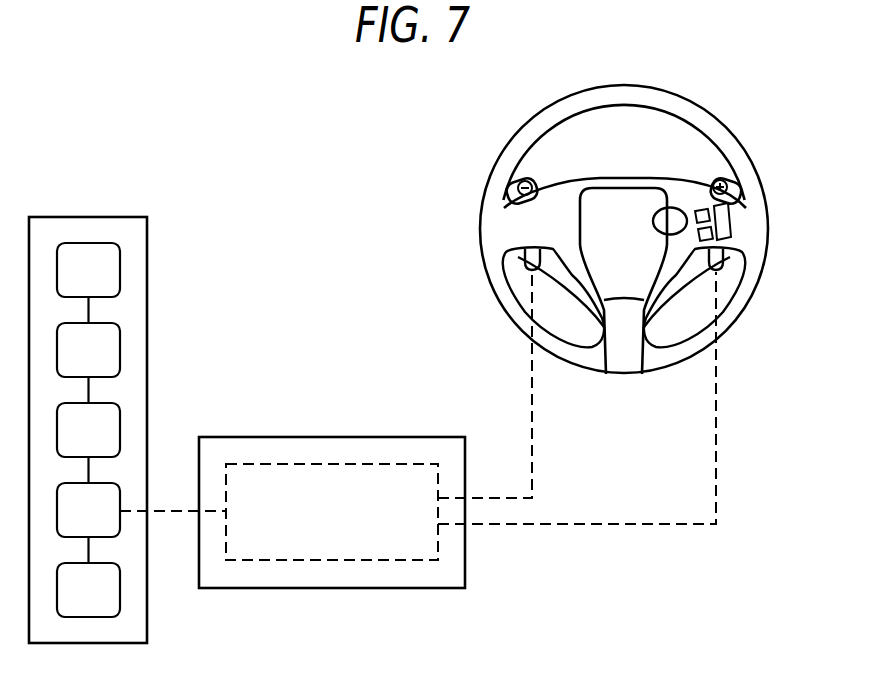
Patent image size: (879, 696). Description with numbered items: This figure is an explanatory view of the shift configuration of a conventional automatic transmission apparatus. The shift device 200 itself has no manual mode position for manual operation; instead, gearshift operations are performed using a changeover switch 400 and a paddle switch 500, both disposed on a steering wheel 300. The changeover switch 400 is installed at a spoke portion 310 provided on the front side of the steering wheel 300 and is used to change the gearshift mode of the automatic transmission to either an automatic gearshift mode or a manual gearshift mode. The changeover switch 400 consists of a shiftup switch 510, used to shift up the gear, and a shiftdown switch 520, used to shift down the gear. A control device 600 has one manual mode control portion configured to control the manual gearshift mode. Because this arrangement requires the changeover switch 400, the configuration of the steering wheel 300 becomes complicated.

The shift device 200 is at (108, 217).
The steering wheel 300 is at (712, 111).
The spoke portion 310 is at (732, 219).
The changeover switch 400 is at (676, 209).
The paddle switch 500 is at (645, 298).
The shiftup switch 510 is at (727, 186).
The shiftdown switch 520 is at (519, 184).
The control device 600 is at (347, 437).